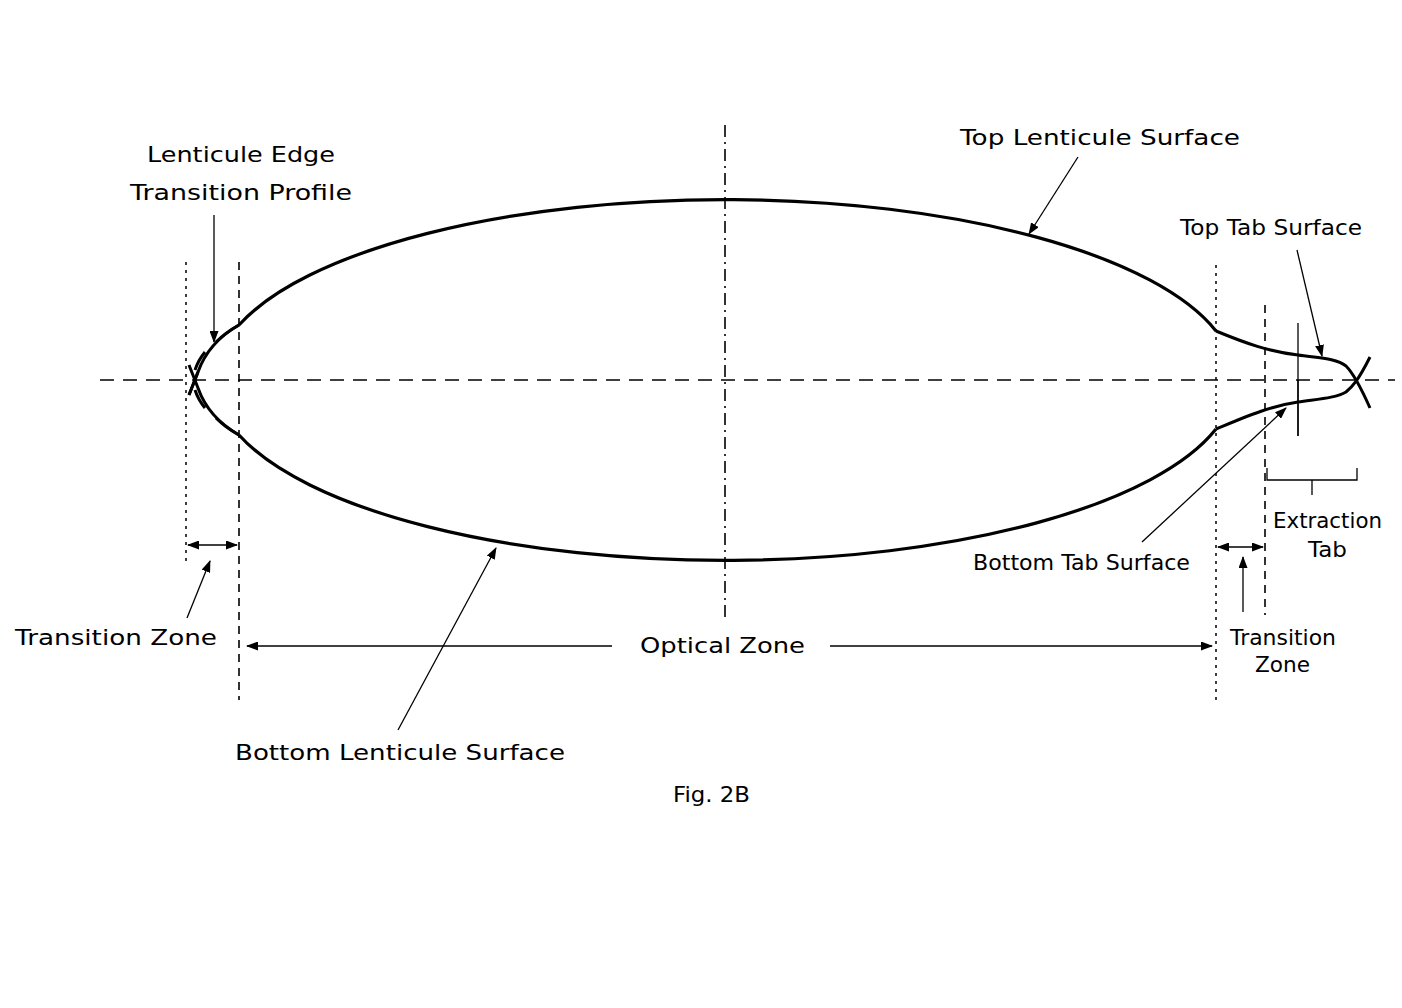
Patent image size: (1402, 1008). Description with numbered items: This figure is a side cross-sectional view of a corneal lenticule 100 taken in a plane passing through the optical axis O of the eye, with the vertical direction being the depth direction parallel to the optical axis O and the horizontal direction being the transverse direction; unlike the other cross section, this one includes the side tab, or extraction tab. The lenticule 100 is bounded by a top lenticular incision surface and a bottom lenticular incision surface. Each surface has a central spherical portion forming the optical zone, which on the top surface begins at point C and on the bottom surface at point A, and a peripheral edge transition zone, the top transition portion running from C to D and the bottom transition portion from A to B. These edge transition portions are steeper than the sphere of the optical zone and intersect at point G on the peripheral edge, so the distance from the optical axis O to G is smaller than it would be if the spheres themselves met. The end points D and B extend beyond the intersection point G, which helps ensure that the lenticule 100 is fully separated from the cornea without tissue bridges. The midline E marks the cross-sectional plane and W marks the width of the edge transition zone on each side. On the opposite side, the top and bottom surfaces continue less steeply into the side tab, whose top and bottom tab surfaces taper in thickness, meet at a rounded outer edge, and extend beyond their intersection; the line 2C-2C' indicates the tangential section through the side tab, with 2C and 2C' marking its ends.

The lenticule 100 is at (553, 158).
The end point of bottom spherical portion A is at (231, 439).
The end point of bottom edge transition portion B is at (185, 352).
The end point of top spherical portion C is at (244, 312).
The end point of top edge transition portion D is at (183, 414).
The optical axis / midline E is at (739, 382).
The intersection point G is at (180, 383).
The optical axis O is at (742, 373).
The transition zone width W is at (725, 529).
The section direction 2C is at (1342, 372).
The section direction 2C' is at (1346, 414).